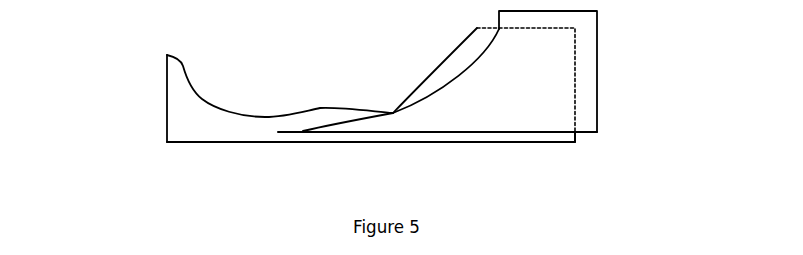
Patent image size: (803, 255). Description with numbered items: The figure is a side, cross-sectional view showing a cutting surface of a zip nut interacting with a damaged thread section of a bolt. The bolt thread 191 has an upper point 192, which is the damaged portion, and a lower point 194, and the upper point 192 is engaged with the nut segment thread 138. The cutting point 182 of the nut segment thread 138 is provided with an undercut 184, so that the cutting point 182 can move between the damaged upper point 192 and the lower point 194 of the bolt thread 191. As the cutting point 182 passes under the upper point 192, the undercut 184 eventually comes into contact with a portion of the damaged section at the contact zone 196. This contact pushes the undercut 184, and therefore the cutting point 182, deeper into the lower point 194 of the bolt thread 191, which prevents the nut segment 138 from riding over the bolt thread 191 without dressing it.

The nut segment thread 138 is at (587, 78).
The cutting point 182 is at (278, 132).
The undercut 184 is at (555, 78).
The bolt thread 191 is at (185, 117).
The upper point 192 is at (320, 108).
The lower point 194 is at (240, 141).
The contact zone 196 is at (393, 113).